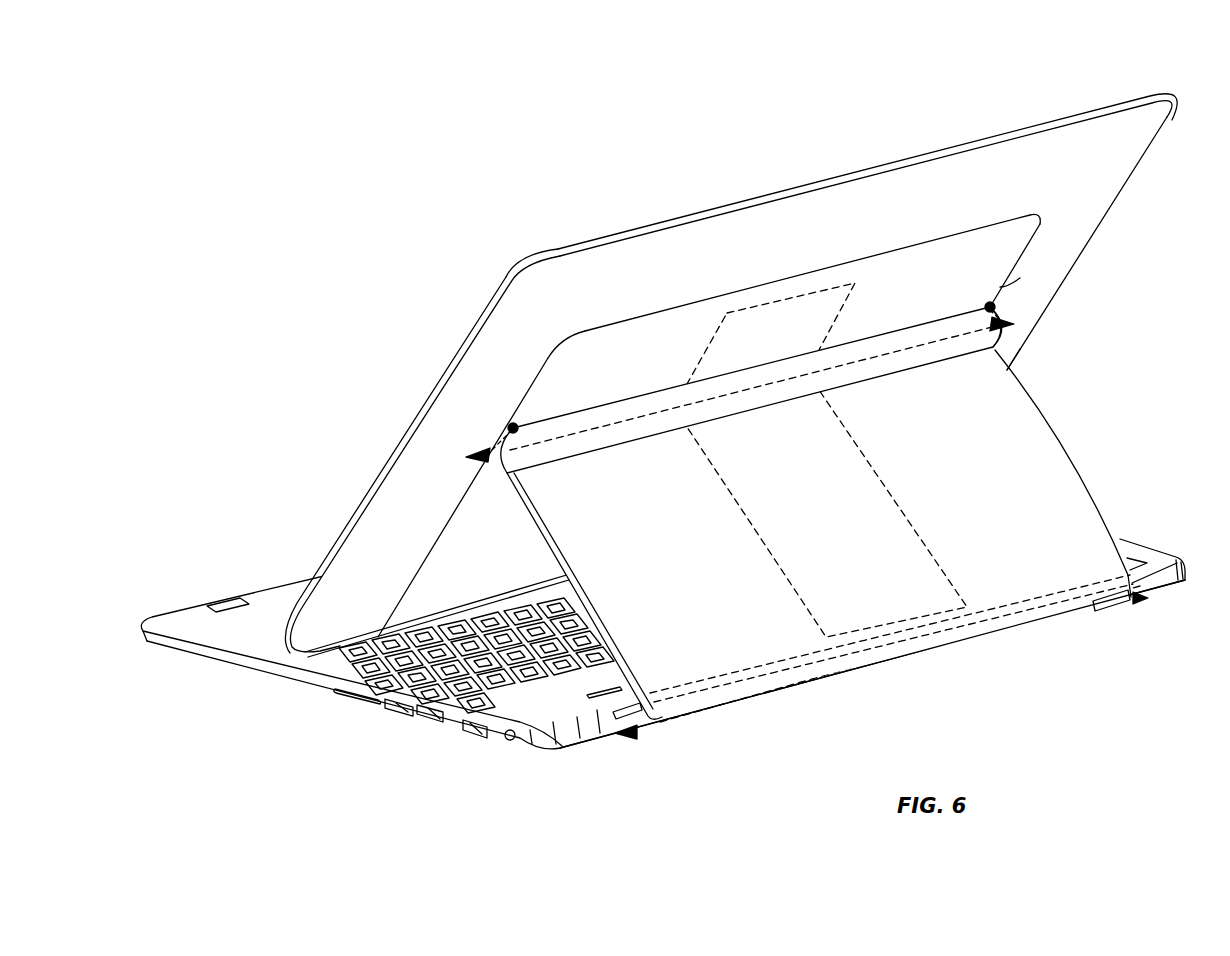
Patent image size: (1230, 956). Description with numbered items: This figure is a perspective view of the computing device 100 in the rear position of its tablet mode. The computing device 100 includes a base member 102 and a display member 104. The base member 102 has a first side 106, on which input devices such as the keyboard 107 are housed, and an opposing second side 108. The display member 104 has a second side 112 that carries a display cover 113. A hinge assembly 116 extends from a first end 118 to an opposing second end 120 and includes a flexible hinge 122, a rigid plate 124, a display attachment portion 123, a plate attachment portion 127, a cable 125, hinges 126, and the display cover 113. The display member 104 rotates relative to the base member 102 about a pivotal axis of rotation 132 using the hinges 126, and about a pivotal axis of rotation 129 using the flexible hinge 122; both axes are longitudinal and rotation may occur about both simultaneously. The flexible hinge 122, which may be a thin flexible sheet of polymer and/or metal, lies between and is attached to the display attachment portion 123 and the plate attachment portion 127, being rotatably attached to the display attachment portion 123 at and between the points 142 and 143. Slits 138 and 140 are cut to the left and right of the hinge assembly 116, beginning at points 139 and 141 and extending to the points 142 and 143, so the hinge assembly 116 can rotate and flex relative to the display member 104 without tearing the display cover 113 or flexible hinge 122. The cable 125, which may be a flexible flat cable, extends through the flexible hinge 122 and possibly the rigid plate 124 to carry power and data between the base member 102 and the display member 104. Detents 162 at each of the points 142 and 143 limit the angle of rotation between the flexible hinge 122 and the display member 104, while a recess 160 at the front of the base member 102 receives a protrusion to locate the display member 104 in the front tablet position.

The computing device 100 is at (298, 188).
The base member 102 is at (661, 578).
The display member 104 is at (525, 276).
The first side 106 is at (1158, 553).
The keyboard 107 is at (443, 683).
The second side 108 is at (200, 657).
The second side 112 is at (822, 180).
The display cover 113 is at (862, 233).
The hinge assembly 116 is at (1060, 438).
The first end 118 is at (920, 653).
The second end 120 is at (709, 425).
The flexible hinge 122 is at (1000, 340).
The display attachment portion 123 is at (1031, 278).
The rigid plate 124 is at (555, 560).
The cable 125 is at (905, 492).
The hinges 126 is at (1097, 609).
The plate attachment portion 127 is at (821, 515).
The pivotal axis of rotation 129 is at (645, 410).
The pivotal axis of rotation 132 is at (785, 693).
The slit 138 is at (547, 360).
The point 139 is at (566, 352).
The slit 140 is at (1020, 262).
The point 141 is at (1066, 275).
The point 142 is at (507, 425).
The point 143 is at (986, 306).
The recess 160 is at (226, 597).
The detent 162 is at (512, 424).